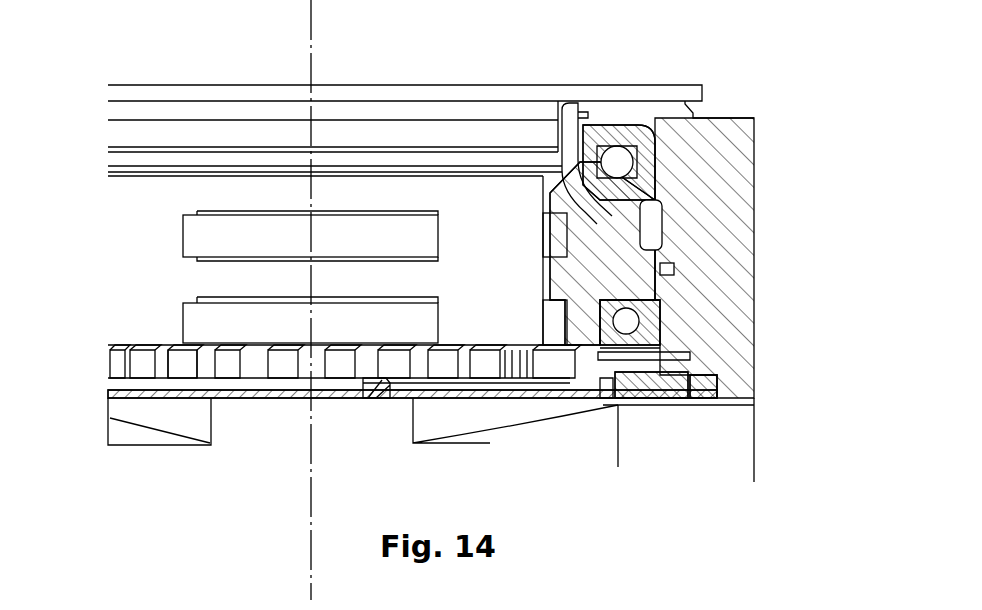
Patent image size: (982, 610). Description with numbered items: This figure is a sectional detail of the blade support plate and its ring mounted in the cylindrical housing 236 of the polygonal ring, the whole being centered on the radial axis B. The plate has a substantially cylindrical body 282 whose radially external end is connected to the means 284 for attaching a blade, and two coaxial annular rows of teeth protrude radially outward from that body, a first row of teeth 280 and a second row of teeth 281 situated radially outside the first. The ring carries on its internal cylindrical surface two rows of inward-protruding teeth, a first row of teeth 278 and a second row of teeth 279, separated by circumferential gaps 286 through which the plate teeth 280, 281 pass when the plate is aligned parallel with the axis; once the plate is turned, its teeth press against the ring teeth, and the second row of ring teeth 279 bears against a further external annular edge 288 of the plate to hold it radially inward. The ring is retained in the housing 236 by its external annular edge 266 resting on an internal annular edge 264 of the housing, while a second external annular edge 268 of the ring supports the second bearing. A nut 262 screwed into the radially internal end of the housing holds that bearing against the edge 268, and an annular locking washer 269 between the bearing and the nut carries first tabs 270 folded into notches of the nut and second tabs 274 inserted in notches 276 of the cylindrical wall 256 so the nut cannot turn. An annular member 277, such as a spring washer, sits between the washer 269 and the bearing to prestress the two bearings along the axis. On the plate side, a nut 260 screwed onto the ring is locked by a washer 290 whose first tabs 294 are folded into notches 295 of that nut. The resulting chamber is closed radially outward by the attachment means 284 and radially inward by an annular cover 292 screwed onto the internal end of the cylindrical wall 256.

The housing 236 is at (647, 233).
The cylindrical wall 256 is at (705, 265).
The nut 260 is at (107, 372).
The nut 262 is at (648, 390).
The internal annular edge 264 is at (620, 117).
The external annular edge 266 is at (685, 185).
The second external annular edge 268 is at (690, 272).
The annular locking washer 269 is at (710, 352).
The first tabs 270 is at (612, 385).
The second tabs 274 is at (680, 390).
The notches 276 is at (690, 326).
The annular member 277 is at (700, 325).
The first row of teeth 278 is at (545, 350).
The second row of teeth 279 is at (572, 103).
The first row of teeth 280 is at (198, 316).
The second row of teeth 281 is at (200, 233).
The cylindrical body 282 is at (148, 200).
The means for attaching a blade 284 is at (357, 87).
The circumferential gaps 286 is at (460, 320).
The further external annular edge 288 is at (247, 160).
The washer 290 is at (110, 345).
The annular cover 292 is at (386, 395).
The first tabs 294 is at (125, 372).
The notches 295 is at (200, 372).